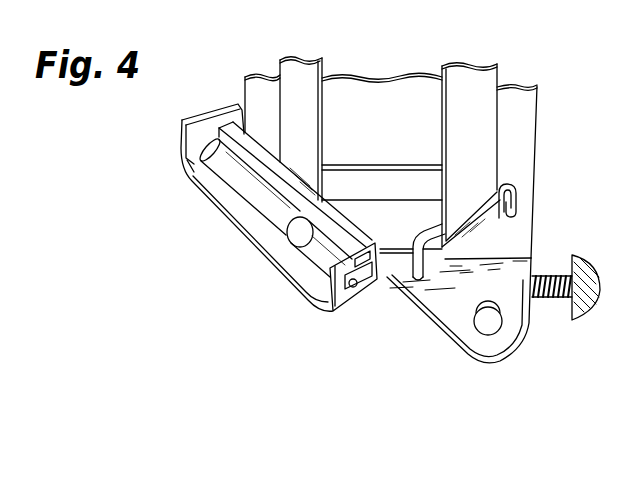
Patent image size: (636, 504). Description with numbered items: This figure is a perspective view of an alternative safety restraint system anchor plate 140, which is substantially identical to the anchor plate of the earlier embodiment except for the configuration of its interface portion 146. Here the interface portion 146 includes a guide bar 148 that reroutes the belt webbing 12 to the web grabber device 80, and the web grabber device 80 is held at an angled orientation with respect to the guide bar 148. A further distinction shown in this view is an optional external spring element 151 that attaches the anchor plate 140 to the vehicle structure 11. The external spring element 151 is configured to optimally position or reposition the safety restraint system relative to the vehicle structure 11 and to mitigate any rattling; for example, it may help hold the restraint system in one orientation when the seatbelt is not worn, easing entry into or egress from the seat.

The web grabber device 80 is at (227, 98).
The anchor plate 140 is at (521, 67).
The belt webbing 12 is at (460, 113).
The guide bar 148 is at (502, 183).
The interface portion 146 is at (537, 208).
The vehicle structure 11 is at (582, 303).
The external spring element 151 is at (552, 298).